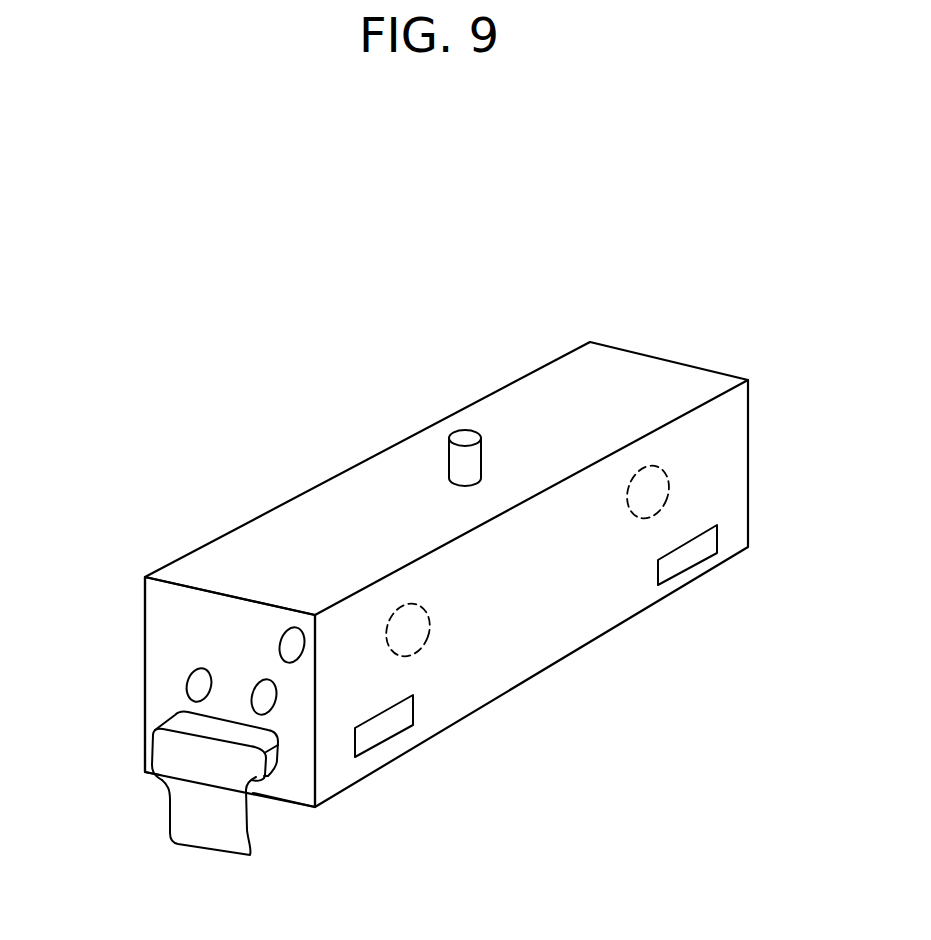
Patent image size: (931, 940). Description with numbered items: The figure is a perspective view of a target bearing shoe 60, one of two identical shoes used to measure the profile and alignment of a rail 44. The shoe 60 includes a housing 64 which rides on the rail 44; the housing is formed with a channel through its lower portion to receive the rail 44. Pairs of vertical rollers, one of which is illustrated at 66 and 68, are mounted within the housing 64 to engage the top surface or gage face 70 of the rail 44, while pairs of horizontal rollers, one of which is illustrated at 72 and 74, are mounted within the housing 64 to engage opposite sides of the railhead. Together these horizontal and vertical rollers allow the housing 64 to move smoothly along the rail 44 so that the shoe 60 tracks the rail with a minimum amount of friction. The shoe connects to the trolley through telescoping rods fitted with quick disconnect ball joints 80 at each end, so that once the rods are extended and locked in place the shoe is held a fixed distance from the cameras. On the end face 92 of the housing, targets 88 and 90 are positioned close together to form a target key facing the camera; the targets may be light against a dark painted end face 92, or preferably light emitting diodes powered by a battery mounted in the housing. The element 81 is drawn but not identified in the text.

The shoe 60 is at (455, 342).
The housing 64 is at (727, 463).
The vertical roller 66 is at (420, 627).
The vertical roller 68 is at (667, 477).
The gage face 70 is at (192, 718).
The horizontal roller 72 is at (393, 725).
The horizontal roller 74 is at (680, 562).
The quick disconnect ball joint 80 is at (465, 434).
The hole 81 is at (196, 686).
The target 88 is at (265, 697).
The target 90 is at (288, 628).
The end face 92 is at (165, 623).
The rail 44 is at (160, 752).